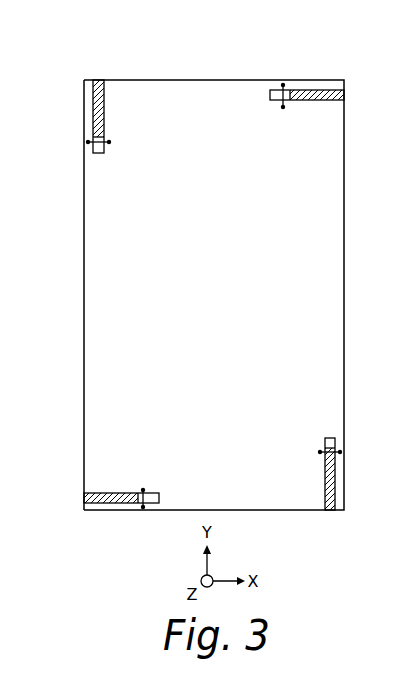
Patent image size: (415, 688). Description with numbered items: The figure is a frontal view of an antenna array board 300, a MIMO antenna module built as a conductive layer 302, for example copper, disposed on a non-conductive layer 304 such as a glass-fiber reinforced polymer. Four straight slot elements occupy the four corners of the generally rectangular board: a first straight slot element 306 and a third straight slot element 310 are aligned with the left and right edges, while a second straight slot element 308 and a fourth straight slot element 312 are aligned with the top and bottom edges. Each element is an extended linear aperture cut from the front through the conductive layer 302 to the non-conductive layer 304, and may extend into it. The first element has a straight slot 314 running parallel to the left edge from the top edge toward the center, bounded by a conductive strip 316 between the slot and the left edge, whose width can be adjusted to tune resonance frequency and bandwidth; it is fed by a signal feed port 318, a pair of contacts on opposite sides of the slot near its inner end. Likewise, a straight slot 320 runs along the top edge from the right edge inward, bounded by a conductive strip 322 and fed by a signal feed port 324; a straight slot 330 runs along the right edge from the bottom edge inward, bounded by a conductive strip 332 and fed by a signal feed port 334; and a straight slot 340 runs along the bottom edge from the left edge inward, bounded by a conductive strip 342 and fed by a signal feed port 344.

The antenna array board 300 is at (214, 43).
The conductive layer 302 is at (198, 302).
The non-conductive layer 304 is at (84, 266).
The first straight slot element 306 is at (86, 70).
The second straight slot element 308 is at (314, 76).
The third straight slot element 310 is at (337, 516).
The fourth straight slot element 312 is at (102, 512).
The straight slot 314 is at (97, 79).
The conductive strip 316 is at (90, 110).
The signal feed port 318 is at (87, 141).
The straight slot 320 is at (306, 100).
The conductive strip 322 is at (345, 88).
The signal feed port 324 is at (283, 84).
The straight slot 330 is at (326, 490).
The conductive strip 332 is at (338, 490).
The signal feed port 334 is at (342, 452).
The straight slot 340 is at (117, 493).
The conductive strip 342 is at (85, 508).
The signal feed port 344 is at (143, 510).